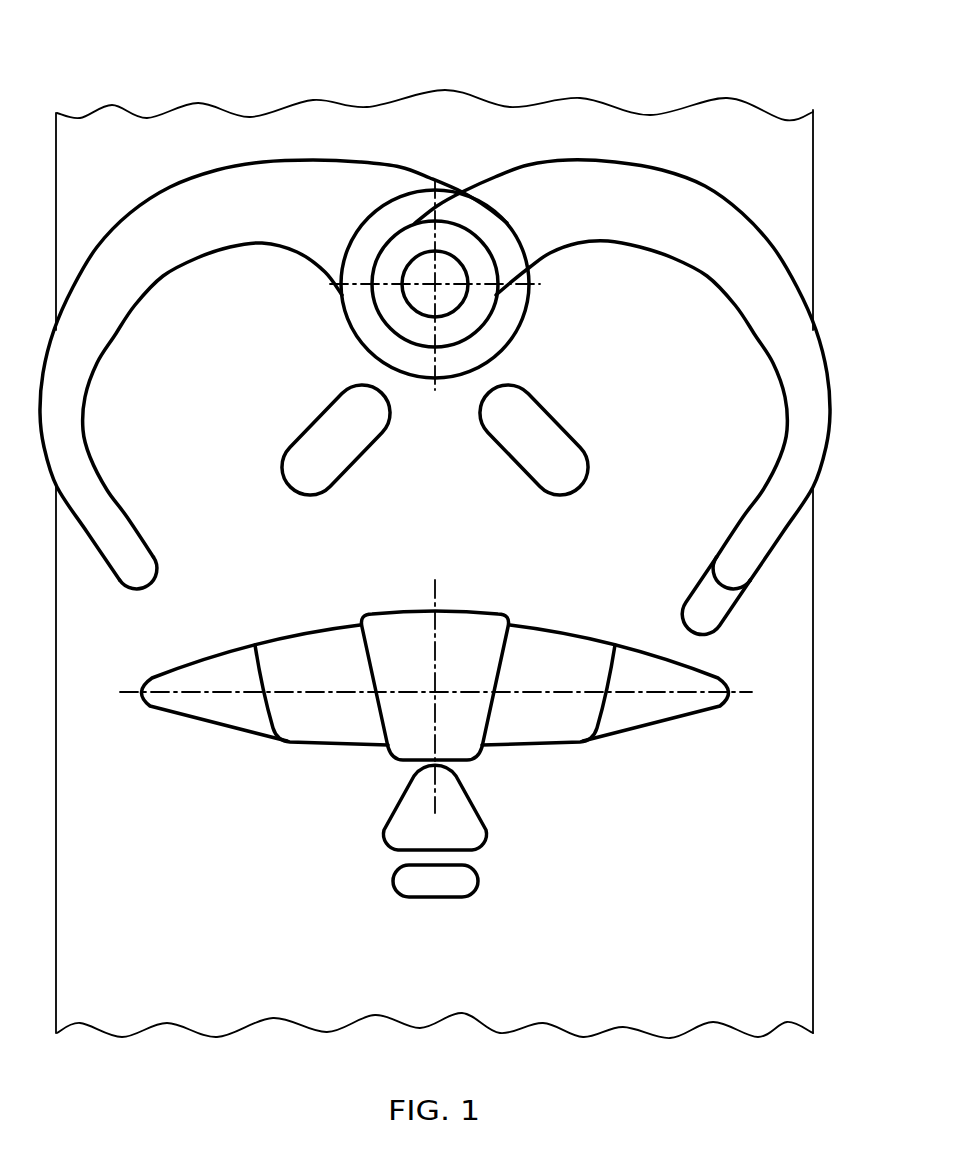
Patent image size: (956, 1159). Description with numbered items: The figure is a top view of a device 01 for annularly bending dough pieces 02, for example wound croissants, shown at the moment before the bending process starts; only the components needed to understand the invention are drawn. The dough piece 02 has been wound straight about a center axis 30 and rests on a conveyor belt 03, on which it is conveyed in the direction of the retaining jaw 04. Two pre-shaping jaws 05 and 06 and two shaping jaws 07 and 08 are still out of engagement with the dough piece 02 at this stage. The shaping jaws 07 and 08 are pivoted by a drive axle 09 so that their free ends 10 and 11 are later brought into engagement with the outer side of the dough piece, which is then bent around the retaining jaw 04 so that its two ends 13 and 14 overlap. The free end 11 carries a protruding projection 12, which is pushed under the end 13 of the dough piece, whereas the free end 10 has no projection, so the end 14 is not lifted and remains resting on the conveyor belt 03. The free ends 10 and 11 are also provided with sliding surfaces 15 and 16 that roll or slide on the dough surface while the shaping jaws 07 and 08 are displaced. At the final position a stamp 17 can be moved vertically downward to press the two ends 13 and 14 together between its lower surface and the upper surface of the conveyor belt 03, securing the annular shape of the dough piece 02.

The device 01 is at (618, 73).
The dough piece 02 is at (436, 696).
The conveyor belt 03 is at (627, 1016).
The retaining jaw 04 is at (486, 823).
The pre-shaping jaw 05 is at (326, 492).
The pre-shaping jaw 06 is at (544, 492).
The shaping jaw 07 is at (157, 301).
The shaping jaw 08 is at (713, 301).
The drive axle 09 is at (438, 283).
The free end 10 is at (130, 568).
The free end 11 is at (751, 581).
The projection 12 is at (702, 596).
The end of the dough piece 13 is at (694, 717).
The end of the dough piece 14 is at (188, 717).
The sliding surface 15 is at (158, 598).
The sliding surface 16 is at (722, 590).
The stamp 17 is at (473, 882).
The center axis 30 is at (220, 695).